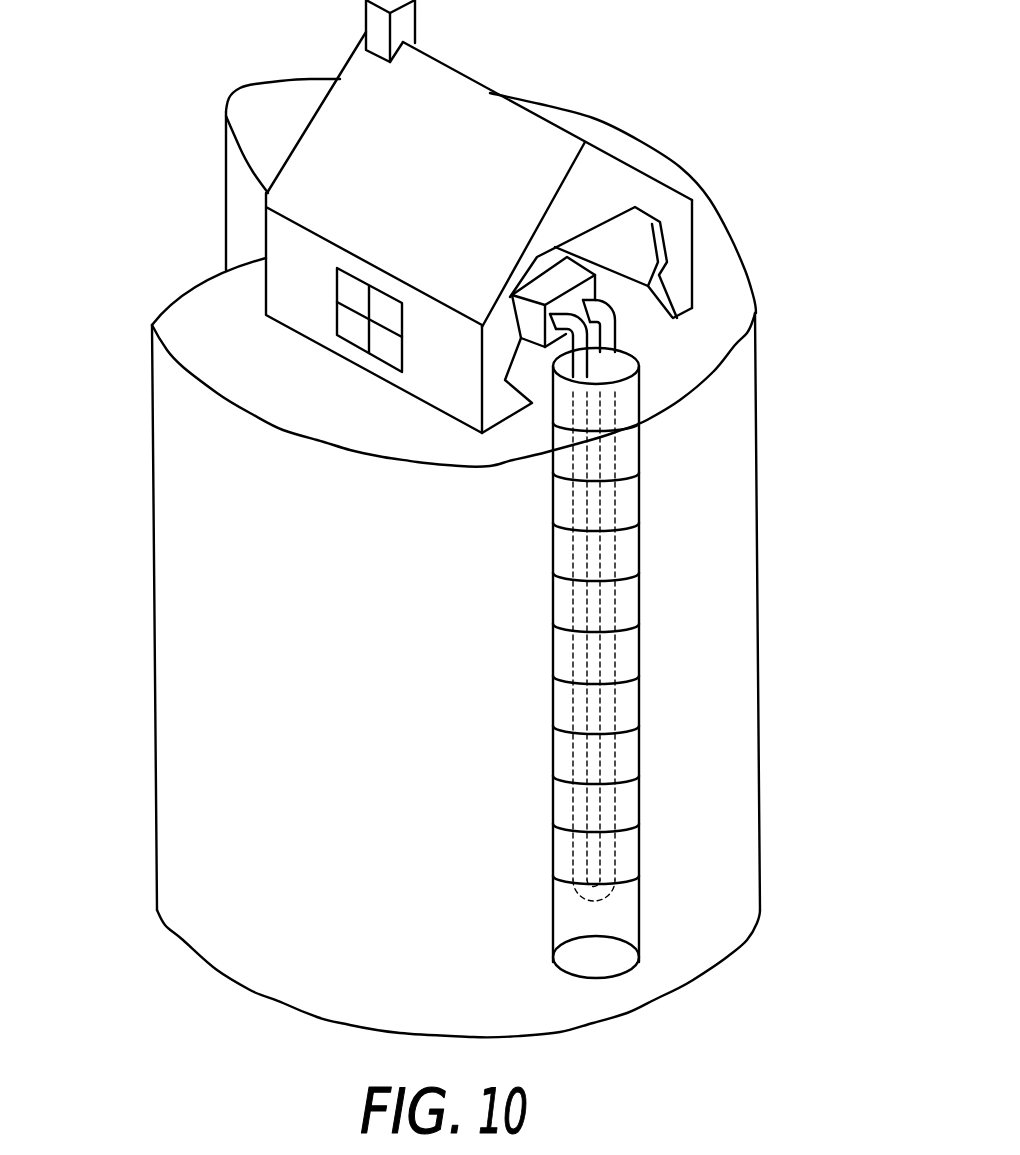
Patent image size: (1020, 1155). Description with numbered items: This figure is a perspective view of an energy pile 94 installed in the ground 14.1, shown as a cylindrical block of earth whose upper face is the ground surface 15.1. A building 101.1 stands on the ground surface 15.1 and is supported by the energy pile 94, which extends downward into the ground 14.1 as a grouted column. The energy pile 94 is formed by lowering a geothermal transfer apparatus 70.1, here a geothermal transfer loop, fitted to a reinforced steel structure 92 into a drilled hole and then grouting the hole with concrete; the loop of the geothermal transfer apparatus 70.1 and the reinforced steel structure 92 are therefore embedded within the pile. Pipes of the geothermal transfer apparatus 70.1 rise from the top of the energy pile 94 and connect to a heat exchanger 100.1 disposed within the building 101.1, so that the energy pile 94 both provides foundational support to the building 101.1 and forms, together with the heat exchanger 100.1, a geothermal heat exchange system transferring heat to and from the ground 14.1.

The ground 14.1 is at (232, 690).
The ground surface 15.1 is at (705, 338).
The geothermal transfer apparatus 70.1 is at (704, 663).
The reinforced steel structure 92 is at (640, 607).
The energy pile 94 is at (640, 535).
The heat exchanger 100.1 is at (567, 252).
The building 101.1 is at (445, 160).